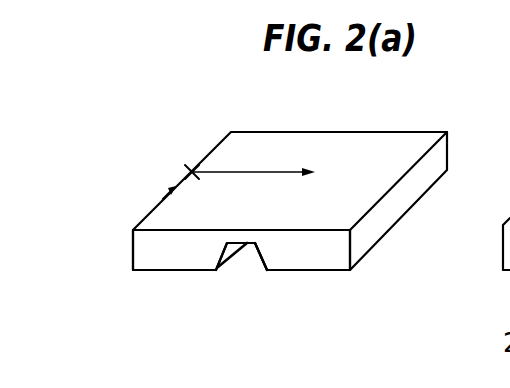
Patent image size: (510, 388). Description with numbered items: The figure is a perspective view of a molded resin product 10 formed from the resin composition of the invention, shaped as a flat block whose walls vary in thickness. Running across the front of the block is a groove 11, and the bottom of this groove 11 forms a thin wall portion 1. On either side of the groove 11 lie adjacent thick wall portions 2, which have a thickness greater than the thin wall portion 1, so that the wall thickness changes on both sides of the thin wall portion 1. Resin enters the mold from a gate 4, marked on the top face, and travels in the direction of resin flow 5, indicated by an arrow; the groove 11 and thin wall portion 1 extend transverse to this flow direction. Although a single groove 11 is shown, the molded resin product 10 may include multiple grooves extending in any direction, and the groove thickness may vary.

The molded resin product 10 is at (62, 148).
The thin wall portion 1 is at (246, 245).
The groove 11 is at (255, 263).
The thick wall portion 2 is at (173, 252).
The gate 4 is at (191, 172).
The direction of resin flow 5 is at (261, 172).